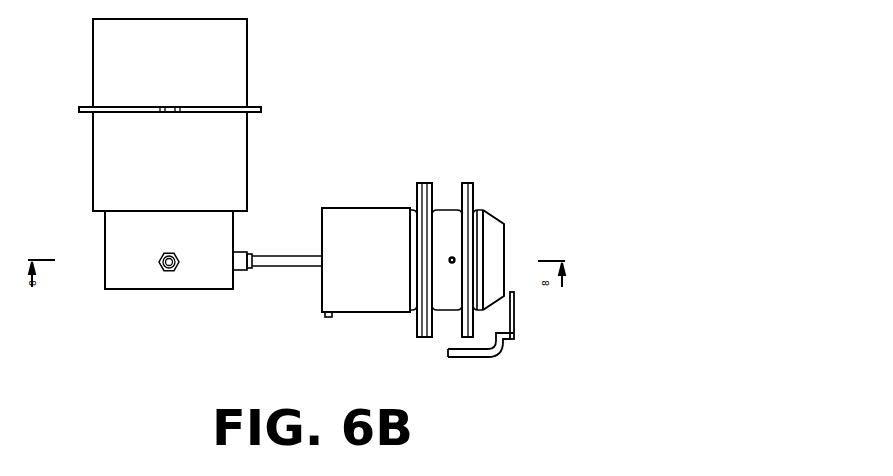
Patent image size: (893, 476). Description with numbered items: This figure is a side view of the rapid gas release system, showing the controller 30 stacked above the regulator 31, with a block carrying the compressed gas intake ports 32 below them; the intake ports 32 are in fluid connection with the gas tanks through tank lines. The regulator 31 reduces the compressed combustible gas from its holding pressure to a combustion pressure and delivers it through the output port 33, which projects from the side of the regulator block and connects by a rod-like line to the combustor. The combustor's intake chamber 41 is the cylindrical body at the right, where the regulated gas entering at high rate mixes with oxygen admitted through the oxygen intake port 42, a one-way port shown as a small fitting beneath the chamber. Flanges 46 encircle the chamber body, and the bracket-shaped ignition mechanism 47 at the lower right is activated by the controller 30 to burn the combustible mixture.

The controller 30 is at (170, 65).
The regulator 31 is at (170, 161).
The compressed gas intake ports 32 is at (170, 292).
The output port 33 is at (245, 250).
The intake chamber 41 is at (343, 232).
The oxygen intake port 42 is at (329, 320).
The flange 46 is at (445, 242).
The ignition mechanism 47 is at (505, 348).